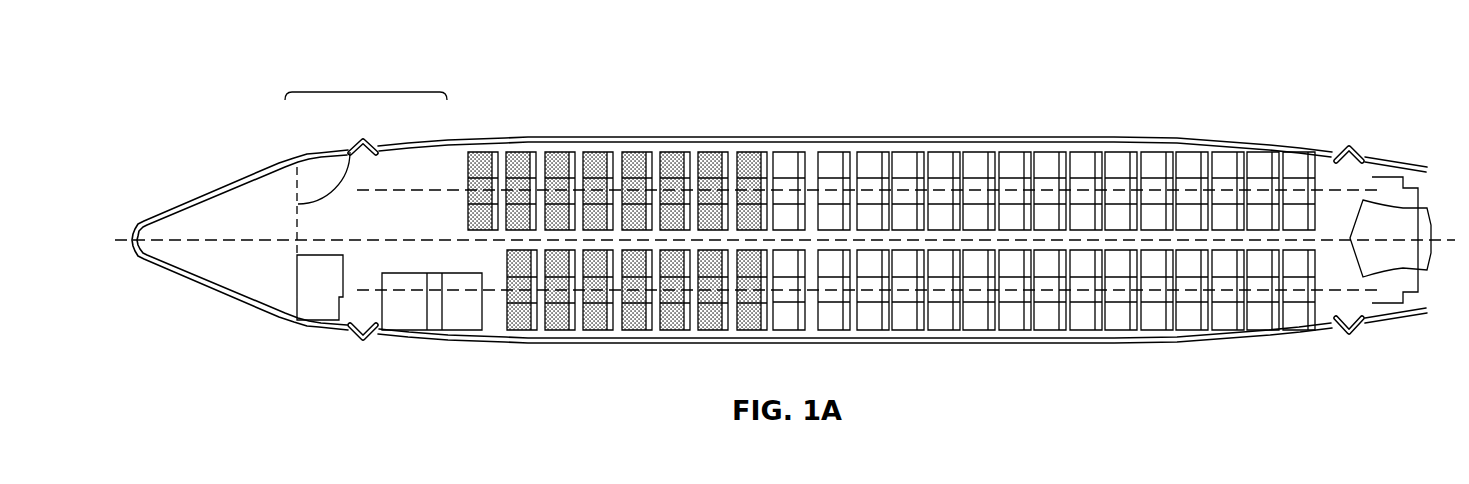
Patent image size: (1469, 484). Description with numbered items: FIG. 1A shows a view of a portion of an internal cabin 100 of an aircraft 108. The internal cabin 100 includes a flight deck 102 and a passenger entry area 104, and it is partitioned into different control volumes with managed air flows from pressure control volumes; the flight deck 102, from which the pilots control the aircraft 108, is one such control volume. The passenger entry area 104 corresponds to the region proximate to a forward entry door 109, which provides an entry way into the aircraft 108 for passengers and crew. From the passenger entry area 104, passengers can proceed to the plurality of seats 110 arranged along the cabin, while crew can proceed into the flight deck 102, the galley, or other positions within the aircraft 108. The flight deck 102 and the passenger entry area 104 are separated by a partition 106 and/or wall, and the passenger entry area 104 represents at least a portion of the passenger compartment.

The internal cabin 100 is at (265, 100).
The flight deck 102 is at (190, 233).
The passenger entry area 104 is at (365, 92).
The partition 106 is at (350, 152).
The aircraft 108 is at (678, 343).
The forward entry door 109 is at (363, 345).
The seats 110 is at (597, 320).